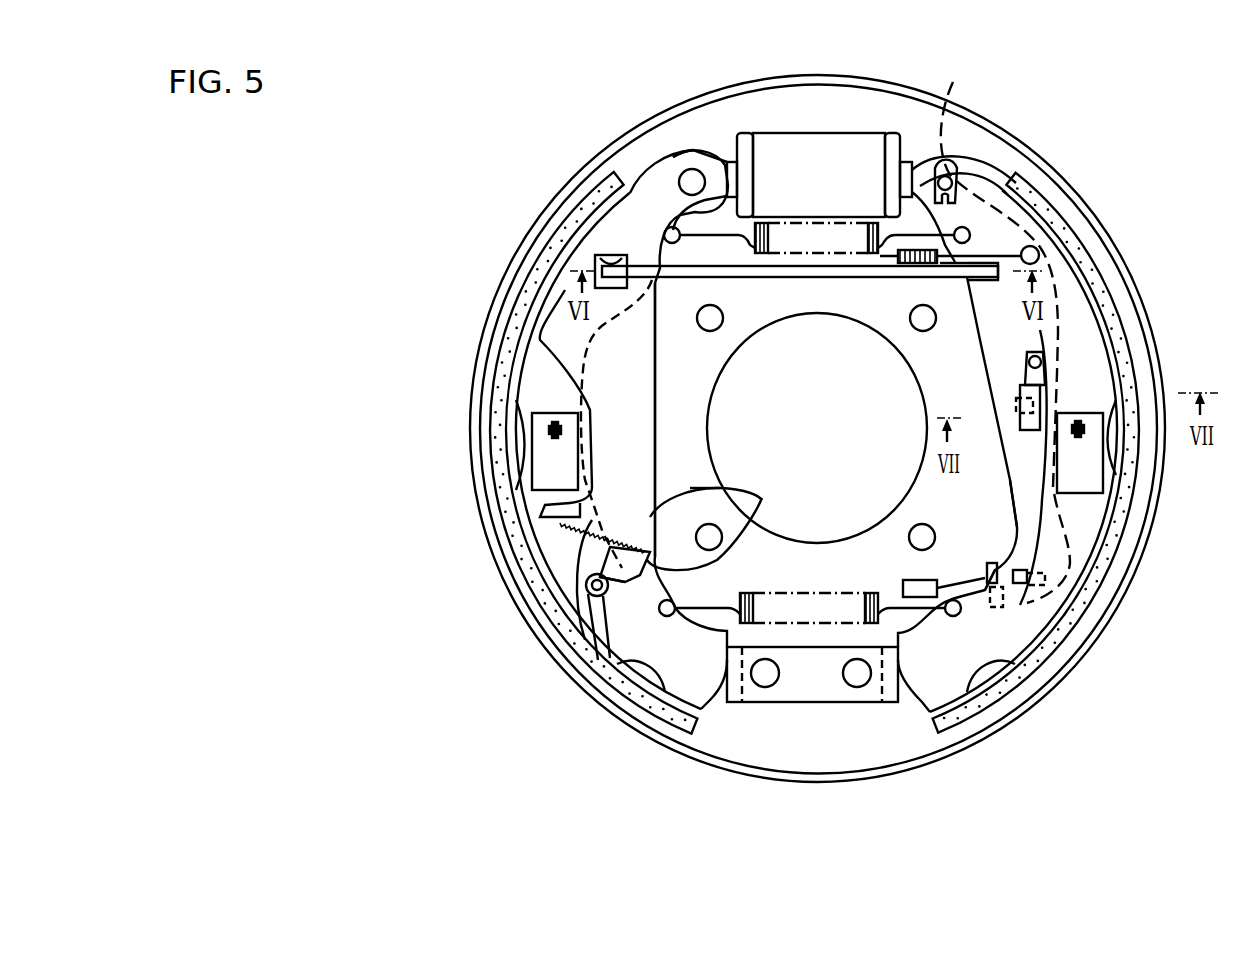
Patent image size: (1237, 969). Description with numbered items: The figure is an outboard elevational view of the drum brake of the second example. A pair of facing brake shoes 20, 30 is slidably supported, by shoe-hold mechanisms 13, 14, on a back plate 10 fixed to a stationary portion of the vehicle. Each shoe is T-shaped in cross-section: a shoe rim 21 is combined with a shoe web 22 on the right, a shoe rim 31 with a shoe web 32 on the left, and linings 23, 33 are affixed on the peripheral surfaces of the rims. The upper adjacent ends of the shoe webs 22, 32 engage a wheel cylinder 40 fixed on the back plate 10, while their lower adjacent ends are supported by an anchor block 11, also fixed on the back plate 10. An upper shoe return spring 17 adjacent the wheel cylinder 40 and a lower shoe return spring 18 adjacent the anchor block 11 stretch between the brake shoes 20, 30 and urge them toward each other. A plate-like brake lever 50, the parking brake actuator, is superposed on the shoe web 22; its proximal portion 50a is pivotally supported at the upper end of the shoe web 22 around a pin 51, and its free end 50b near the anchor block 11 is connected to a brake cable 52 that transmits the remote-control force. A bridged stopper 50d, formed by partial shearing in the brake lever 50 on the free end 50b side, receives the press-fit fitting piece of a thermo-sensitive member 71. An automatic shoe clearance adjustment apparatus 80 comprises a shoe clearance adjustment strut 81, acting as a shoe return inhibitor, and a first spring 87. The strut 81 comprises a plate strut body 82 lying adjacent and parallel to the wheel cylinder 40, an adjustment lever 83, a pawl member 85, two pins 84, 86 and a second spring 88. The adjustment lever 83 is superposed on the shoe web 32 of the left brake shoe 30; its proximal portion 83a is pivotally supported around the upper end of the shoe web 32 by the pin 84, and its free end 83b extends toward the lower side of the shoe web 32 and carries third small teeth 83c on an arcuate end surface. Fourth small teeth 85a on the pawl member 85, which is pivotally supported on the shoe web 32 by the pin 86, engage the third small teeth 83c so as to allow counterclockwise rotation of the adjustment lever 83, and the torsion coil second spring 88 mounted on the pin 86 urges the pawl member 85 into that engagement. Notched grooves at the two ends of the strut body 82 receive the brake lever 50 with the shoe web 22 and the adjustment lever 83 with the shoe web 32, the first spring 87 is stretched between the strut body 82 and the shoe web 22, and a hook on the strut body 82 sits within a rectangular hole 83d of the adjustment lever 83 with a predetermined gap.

The back plate 10 is at (980, 111).
The anchor block 11 is at (827, 703).
The shoe-hold mechanism 13 is at (1103, 466).
The shoe-hold mechanism 14 is at (533, 464).
The upper shoe return spring 17 is at (866, 287).
The lower shoe return spring 18 is at (785, 605).
The brake shoe 20 is at (1028, 418).
The shoe rim 21 is at (1053, 643).
The shoe web 22 is at (1040, 607).
The lining 23 is at (1050, 676).
The brake shoe 30 is at (568, 442).
The shoe rim 31 is at (504, 368).
The shoe web 32 is at (540, 338).
The lining 33 is at (498, 409).
The wheel cylinder 40 is at (812, 134).
The brake lever 50 is at (862, 349).
The proximal portion 50a is at (954, 95).
The free end 50b is at (1010, 540).
The bridged stopper 50d is at (1020, 413).
The pin 51 is at (963, 174).
The brake cable 52 is at (910, 576).
The thermo-sensitive member 71 is at (1042, 382).
The automatic shoe clearance adjustment apparatus 80 is at (738, 300).
The shoe clearance adjustment strut 81 is at (671, 286).
The strut body 82 is at (780, 282).
The adjustment lever 83 is at (583, 324).
The proximal portion 83a is at (695, 165).
The free end 83b is at (545, 520).
The third small teeth 83c is at (590, 576).
The rectangular hole 83d is at (600, 255).
The pin 84 is at (690, 178).
The pawl member 85 is at (721, 516).
The fourth small teeth 85a is at (700, 491).
The pin 86 is at (610, 662).
The first spring 87 is at (868, 284).
The second spring 88 is at (590, 595).